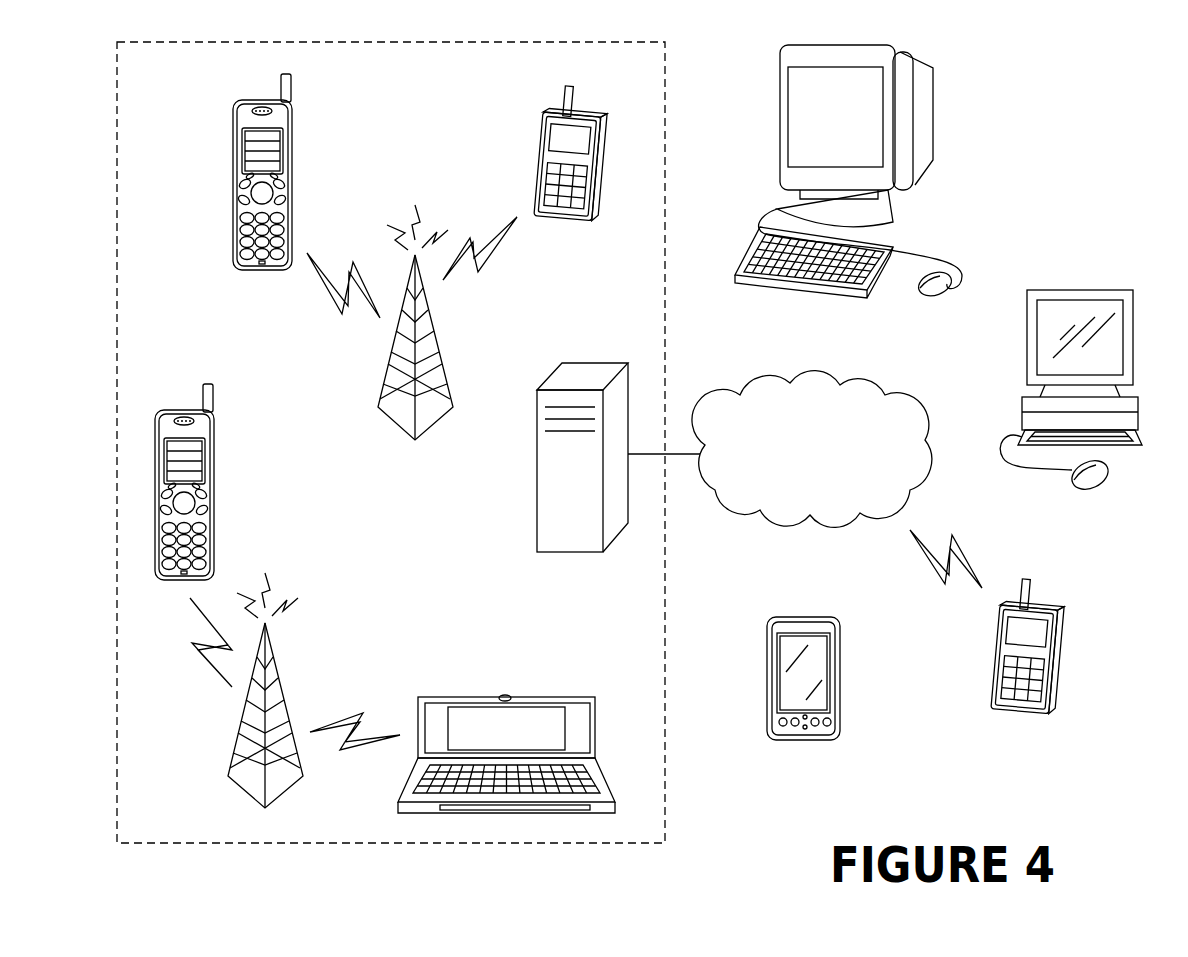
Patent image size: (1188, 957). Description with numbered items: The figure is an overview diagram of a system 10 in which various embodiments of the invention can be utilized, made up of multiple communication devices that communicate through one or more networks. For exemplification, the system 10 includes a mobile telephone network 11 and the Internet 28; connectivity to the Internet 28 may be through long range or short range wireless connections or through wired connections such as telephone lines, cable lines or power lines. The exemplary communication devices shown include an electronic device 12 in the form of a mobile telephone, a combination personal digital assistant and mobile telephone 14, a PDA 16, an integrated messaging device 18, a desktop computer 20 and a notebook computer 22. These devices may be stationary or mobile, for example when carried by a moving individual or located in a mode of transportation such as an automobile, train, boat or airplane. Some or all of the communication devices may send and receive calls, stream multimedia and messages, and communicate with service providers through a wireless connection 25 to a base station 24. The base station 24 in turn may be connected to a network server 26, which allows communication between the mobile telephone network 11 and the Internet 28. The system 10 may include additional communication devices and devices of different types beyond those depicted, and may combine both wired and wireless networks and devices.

The system 10 is at (1124, 561).
The mobile telephone network 11 is at (164, 87).
The electronic device 12 is at (292, 186).
The combination personal digital assistant (PDA) and mobile telephone 14 is at (505, 698).
The PDA 16 is at (840, 676).
The integrated messaging device 18 is at (542, 160).
The desktop computer 20 is at (933, 106).
The notebook computer 22 is at (1080, 290).
The base station 24 is at (435, 327).
The wireless connection 25 is at (212, 667).
The network server 26 is at (537, 472).
The Internet 28 is at (852, 375).